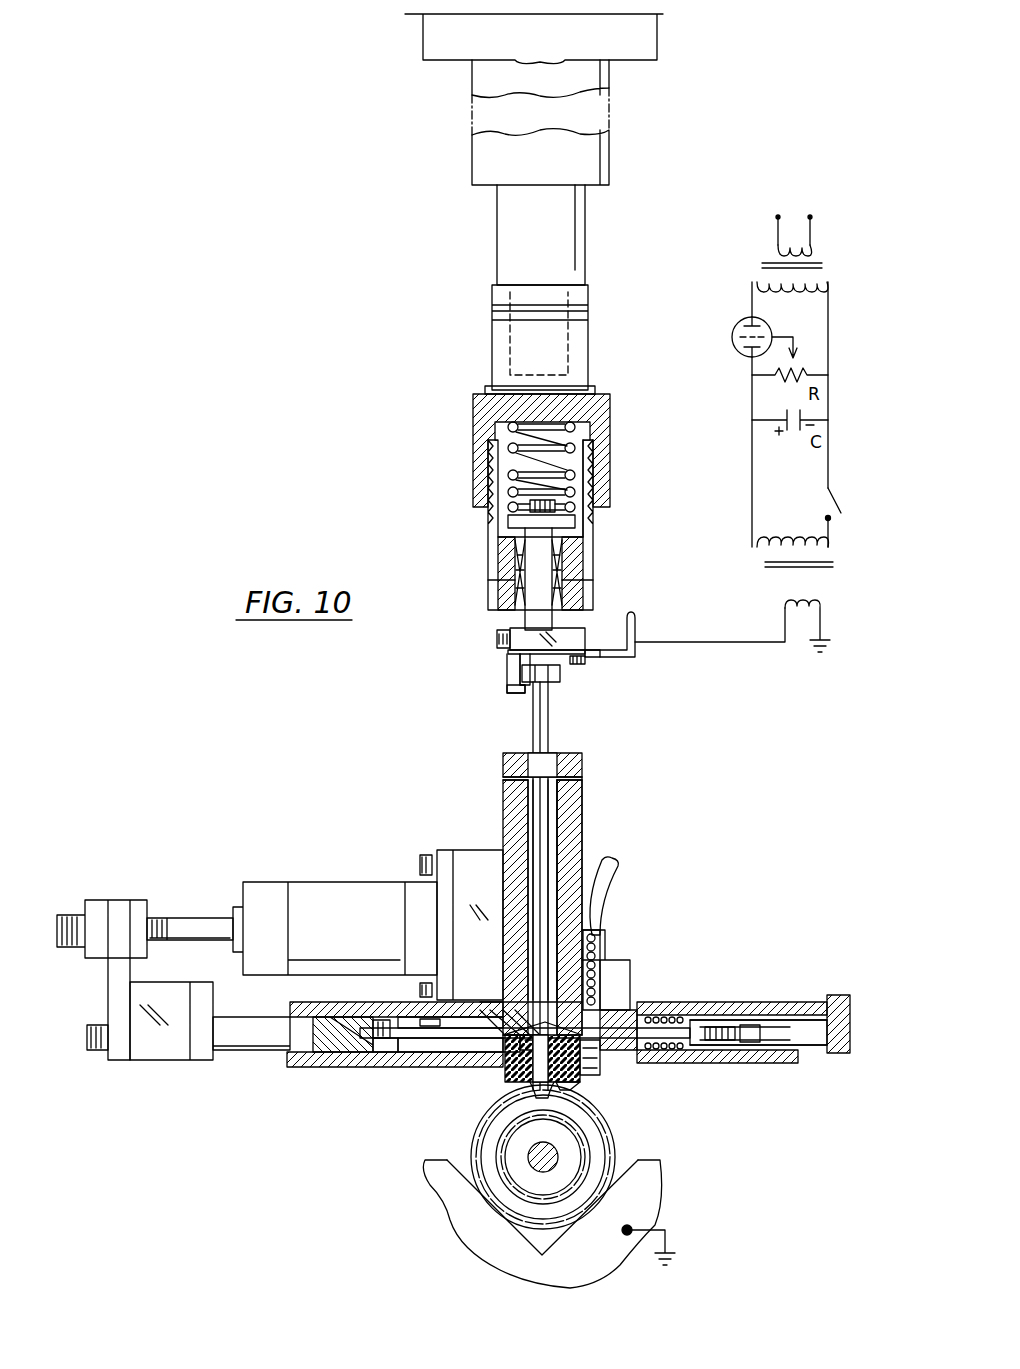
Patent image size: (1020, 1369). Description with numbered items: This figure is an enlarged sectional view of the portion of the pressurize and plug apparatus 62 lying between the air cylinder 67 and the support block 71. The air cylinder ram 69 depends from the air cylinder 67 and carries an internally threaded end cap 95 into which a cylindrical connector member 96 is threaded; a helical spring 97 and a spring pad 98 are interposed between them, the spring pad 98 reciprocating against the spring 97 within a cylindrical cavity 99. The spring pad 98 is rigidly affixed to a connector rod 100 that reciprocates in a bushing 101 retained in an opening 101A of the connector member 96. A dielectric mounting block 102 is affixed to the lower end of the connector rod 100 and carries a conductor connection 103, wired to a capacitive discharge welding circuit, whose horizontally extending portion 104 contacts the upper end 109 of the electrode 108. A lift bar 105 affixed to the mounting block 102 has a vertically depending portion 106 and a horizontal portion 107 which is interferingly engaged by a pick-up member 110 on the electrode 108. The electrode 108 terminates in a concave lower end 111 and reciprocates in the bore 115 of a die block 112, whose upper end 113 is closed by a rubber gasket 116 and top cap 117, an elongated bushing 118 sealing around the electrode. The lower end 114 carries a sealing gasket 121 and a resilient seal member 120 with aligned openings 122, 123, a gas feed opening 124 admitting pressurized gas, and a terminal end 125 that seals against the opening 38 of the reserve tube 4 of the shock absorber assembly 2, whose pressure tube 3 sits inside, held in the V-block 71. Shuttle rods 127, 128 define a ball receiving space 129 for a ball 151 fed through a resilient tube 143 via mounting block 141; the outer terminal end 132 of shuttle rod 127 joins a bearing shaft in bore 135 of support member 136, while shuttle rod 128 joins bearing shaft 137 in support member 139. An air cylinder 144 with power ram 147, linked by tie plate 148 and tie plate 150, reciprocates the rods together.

The air cylinder 67 is at (598, 152).
The air cylinder ram 69 is at (575, 247).
The end cap 95 is at (610, 397).
The connector member 96 is at (488, 524).
The helical spring 97 is at (573, 444).
The cylindrical cavity 99 is at (590, 462).
The spring pad 98 is at (565, 521).
The connector rod 100 is at (535, 552).
The bushing 101 is at (515, 573).
The opening 101A is at (572, 573).
The mounting block 102 is at (585, 630).
The conductor connection 103 is at (643, 624).
The horizontally extending portion 104 is at (603, 665).
The upper end 109 is at (527, 655).
The lift bar 105 is at (510, 669).
The vertically depending portion 106 is at (510, 684).
The horizontal portion 107 is at (523, 694).
The pick-up member 110 is at (560, 677).
The electrode 108 is at (535, 733).
The pressurize and plug apparatus 62 is at (469, 770).
The top cap 117 is at (583, 753).
The rubber gasket 116 is at (580, 777).
The upper end 113 is at (572, 783).
The die block 112 is at (570, 803).
The bushing 118 is at (528, 797).
The bore 115 is at (540, 813).
The resilient tube 143 is at (612, 870).
The ball 151 is at (600, 922).
The mounting block 141 is at (628, 960).
The shuttle rod 128 is at (615, 1010).
The lower end 111 is at (500, 983).
The ball receiving space 129 is at (520, 1010).
The air cylinder 144 is at (345, 887).
The power ram 147 is at (187, 920).
The tie plate 148 is at (106, 973).
The bore 135 is at (245, 1046).
The support member 136 is at (300, 1003).
The outer terminal end 132 is at (378, 1028).
The shuttle rod 127 is at (445, 1035).
The gas feed opening 124 is at (440, 1060).
The lower end 114 is at (490, 1062).
The sealing gasket 121 is at (497, 1060).
The resilient seal member 120 is at (505, 1078).
The terminal end 125 is at (500, 1095).
The opening 122 is at (585, 1065).
The opening 123 is at (570, 1086).
The support member 139 is at (730, 1002).
The bearing shaft 137 is at (800, 1002).
The tie plate 150 is at (842, 995).
The reserve tube 4 is at (615, 1135).
The opening 38 is at (590, 1105).
The pressure tube 3 is at (500, 1180).
The shock absorber assembly 2 is at (640, 1150).
The support block 71 is at (650, 1205).